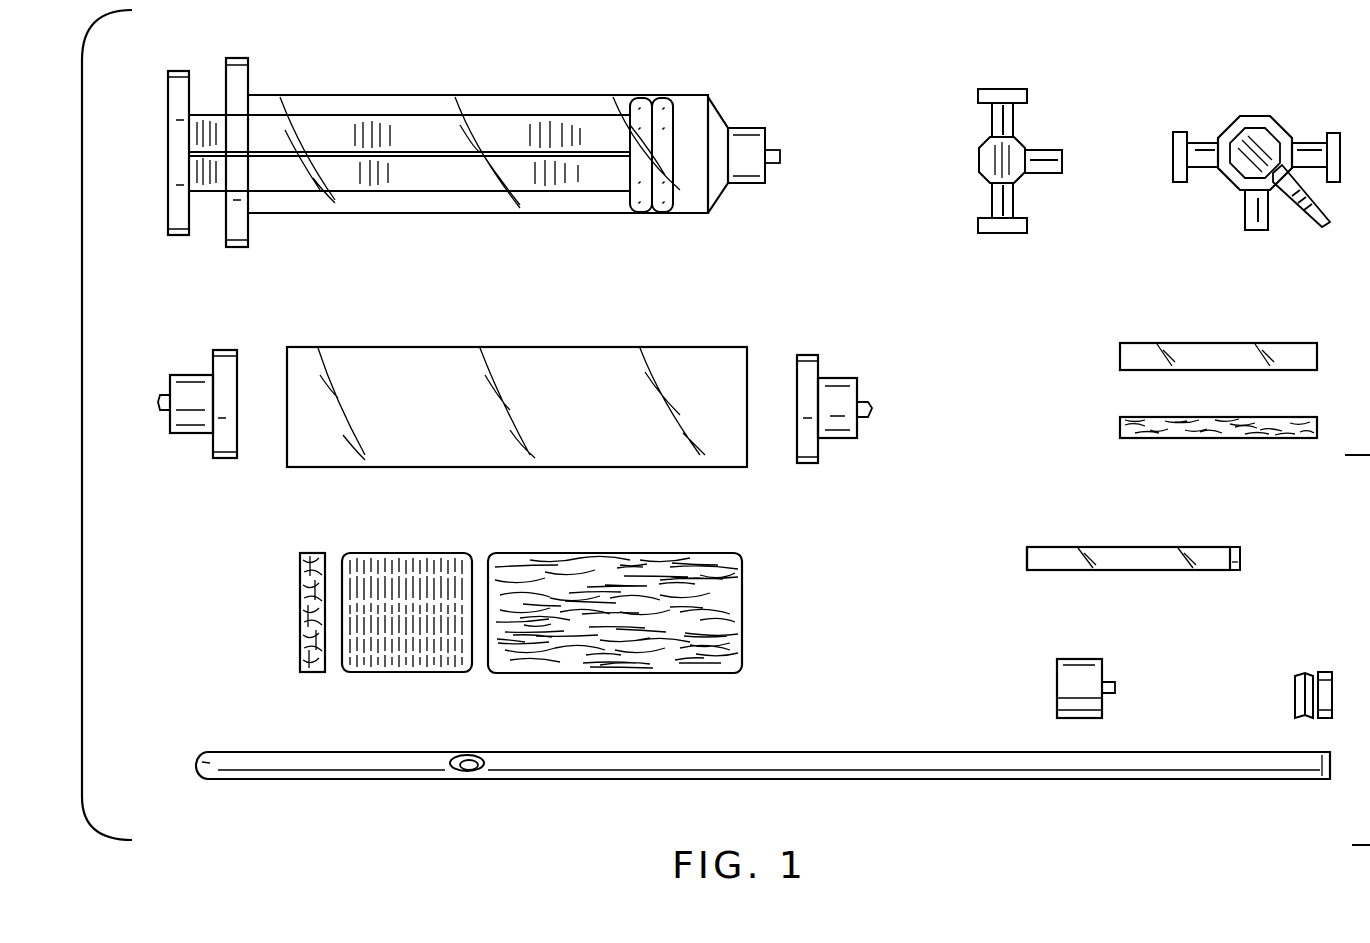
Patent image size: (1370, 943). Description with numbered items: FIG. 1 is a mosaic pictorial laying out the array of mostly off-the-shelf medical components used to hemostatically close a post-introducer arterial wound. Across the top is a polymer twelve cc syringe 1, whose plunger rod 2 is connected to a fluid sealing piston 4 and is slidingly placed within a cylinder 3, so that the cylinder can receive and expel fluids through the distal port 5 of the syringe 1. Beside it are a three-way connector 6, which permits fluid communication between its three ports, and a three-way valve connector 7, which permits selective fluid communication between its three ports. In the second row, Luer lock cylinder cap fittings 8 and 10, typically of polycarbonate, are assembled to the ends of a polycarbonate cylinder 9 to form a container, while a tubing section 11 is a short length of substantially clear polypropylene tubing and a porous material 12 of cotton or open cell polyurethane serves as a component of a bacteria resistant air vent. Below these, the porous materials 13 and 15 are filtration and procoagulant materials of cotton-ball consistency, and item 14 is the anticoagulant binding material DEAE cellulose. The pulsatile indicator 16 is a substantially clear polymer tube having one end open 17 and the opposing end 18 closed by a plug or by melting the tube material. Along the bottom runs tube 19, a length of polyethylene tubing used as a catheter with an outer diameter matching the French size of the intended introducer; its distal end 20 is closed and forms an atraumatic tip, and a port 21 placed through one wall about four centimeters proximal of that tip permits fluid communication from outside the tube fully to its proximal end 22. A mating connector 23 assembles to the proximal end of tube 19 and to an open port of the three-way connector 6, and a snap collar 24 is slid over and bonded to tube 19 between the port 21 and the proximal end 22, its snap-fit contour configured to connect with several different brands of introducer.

The syringe 1 is at (399, 84).
The plunger rod 2 is at (205, 115).
The cylinder 3 is at (462, 212).
The fluid sealing piston 4 is at (658, 108).
The distal port 5 is at (753, 187).
The three-way connector 6 is at (968, 150).
The three-way valve connector 7 is at (1262, 112).
The Luer lock cylinder cap fitting 8 is at (188, 375).
The cylinder 9 is at (555, 348).
The Luer lock cylinder cap fitting 10 is at (857, 378).
The tubing section 11 is at (1258, 343).
The porous material 12 is at (1120, 425).
The porous material 13 is at (300, 590).
The anticoagulant binding material 14 is at (422, 672).
The porous material 15 is at (742, 580).
The pulsatile indicator 16 is at (1145, 547).
The open end 17 is at (1027, 555).
The closed end 18 is at (1240, 558).
The tube 19 is at (851, 782).
The distal end 20 is at (205, 778).
The port 21 is at (472, 772).
The proximal end 22 is at (1335, 775).
The mating connector 23 is at (1057, 675).
The snap collar 24 is at (1295, 693).